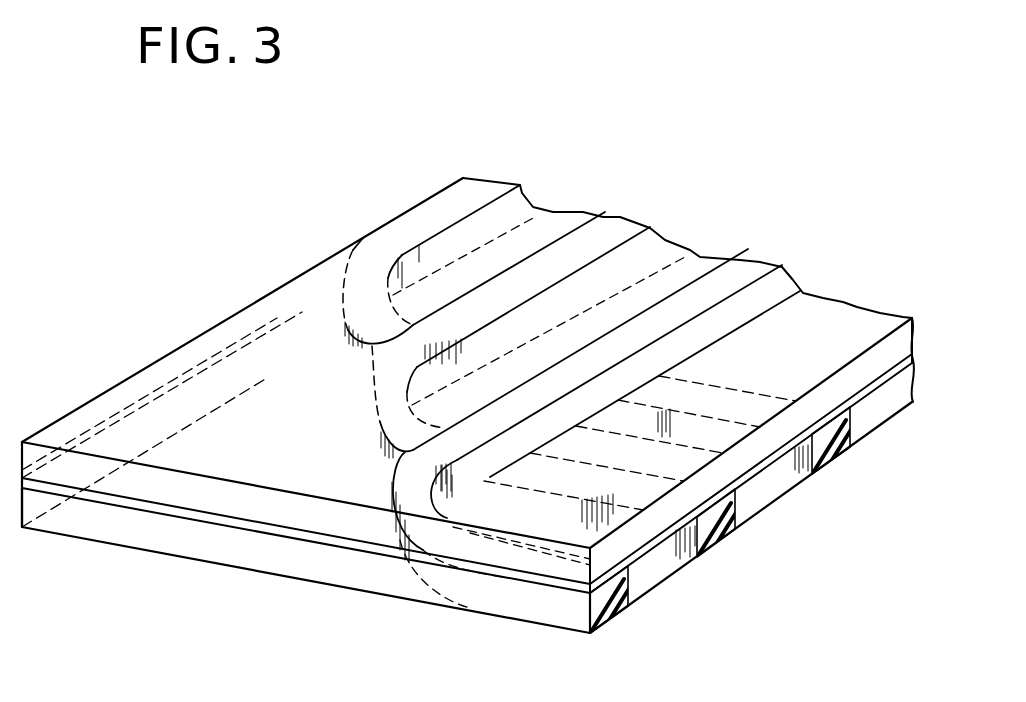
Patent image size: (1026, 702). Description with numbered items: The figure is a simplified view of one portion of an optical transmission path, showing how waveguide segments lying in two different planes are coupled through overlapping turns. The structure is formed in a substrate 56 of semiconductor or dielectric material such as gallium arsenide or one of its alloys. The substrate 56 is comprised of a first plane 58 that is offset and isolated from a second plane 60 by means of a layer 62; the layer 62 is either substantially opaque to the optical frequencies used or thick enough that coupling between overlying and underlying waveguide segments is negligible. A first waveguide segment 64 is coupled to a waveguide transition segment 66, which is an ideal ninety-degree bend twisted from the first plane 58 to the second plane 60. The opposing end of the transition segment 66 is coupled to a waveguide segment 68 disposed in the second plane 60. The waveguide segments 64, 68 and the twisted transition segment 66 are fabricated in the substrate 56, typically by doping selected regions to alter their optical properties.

The substrate 56 is at (23, 533).
The first plane 58 is at (303, 562).
The second plane 60 is at (140, 397).
The layer 62 is at (137, 503).
The first waveguide segment 64 is at (610, 612).
The waveguide transition segment 66 is at (423, 560).
The waveguide segment 68 is at (740, 277).